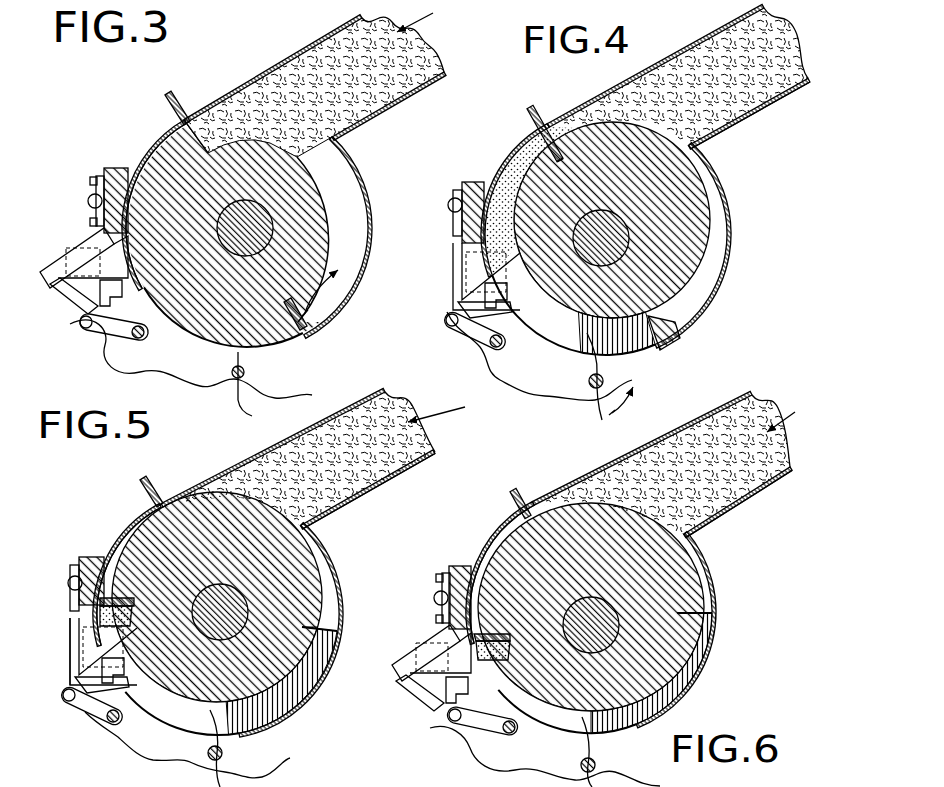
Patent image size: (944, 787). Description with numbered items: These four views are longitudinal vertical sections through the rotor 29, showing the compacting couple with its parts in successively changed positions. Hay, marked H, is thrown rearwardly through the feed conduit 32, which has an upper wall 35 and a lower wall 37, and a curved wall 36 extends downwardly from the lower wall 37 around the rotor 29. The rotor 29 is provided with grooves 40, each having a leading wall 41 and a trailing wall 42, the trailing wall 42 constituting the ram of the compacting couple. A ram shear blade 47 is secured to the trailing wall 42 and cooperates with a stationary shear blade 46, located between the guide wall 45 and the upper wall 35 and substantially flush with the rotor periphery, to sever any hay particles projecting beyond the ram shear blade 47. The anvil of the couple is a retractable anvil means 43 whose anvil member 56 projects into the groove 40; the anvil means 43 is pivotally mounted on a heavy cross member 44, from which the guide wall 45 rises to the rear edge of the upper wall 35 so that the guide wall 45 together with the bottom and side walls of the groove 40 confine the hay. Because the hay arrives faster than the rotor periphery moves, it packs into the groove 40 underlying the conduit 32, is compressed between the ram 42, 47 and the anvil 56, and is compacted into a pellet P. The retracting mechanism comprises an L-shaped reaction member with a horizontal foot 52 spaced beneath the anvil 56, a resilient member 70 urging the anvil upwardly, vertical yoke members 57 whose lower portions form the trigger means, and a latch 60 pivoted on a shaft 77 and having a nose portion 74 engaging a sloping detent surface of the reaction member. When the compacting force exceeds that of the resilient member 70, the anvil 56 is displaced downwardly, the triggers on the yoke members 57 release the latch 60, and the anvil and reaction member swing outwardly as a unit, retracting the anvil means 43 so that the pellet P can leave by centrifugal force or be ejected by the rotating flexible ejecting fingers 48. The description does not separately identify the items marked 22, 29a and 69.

In FIG. 4, the direction of material flow 22 is at (518, 176).
In FIG. 3, the rotor 29 is at (318, 219).
In FIG. 4, the rotor 29 is at (693, 296).
In FIG. 5, the rotor 29 is at (310, 573).
In FIG. 6, the rotor 29 is at (683, 582).
In FIG. 3, the rotor shaft 29a is at (270, 243).
In FIG. 4, the rotor shaft 29a is at (629, 243).
In FIG. 5, the rotor shaft 29a is at (220, 612).
In FIG. 6, the rotor shaft 29a is at (591, 625).
In FIG. 3, the feed conduit 32 is at (407, 92).
In FIG. 4, the feed conduit 32 is at (757, 104).
In FIG. 5, the feed conduit 32 is at (397, 476).
In FIG. 6, the feed conduit 32 is at (757, 493).
In FIG. 3, the upper wall of the feed conduit 35 is at (307, 51).
In FIG. 4, the upper wall of the feed conduit 35 is at (705, 43).
In FIG. 5, the upper wall of the feed conduit 35 is at (250, 463).
In FIG. 6, the upper wall of the feed conduit 35 is at (675, 440).
In FIG. 3, the curved wall 36 is at (364, 268).
In FIG. 4, the curved wall 36 is at (722, 197).
In FIG. 5, the curved wall 36 is at (308, 702).
In FIG. 6, the curved wall 36 is at (713, 635).
In FIG. 4, the lower wall of the feed conduit 37 is at (716, 131).
In FIG. 5, the lower wall of the feed conduit 37 is at (343, 503).
In FIG. 6, the lower wall of the feed conduit 37 is at (707, 521).
In FIG. 3, the groove 40 is at (345, 192).
In FIG. 4, the groove 40 is at (650, 358).
In FIG. 5, the groove 40 is at (300, 673).
In FIG. 6, the groove 40 is at (687, 665).
In FIG. 3, the leading wall 41 is at (200, 115).
In FIG. 4, the leading wall 41 is at (677, 328).
In FIG. 5, the leading wall 41 is at (327, 632).
In FIG. 3, the trailing wall 42 is at (307, 322).
In FIG. 4, the trailing wall 42 is at (558, 123).
In FIG. 3, the retractable anvil means 43 is at (60, 248).
In FIG. 4, the retractable anvil means 43 is at (448, 268).
In FIG. 5, the retractable anvil means 43 is at (68, 648).
In FIG. 6, the retractable anvil means 43 is at (412, 632).
In FIG. 3, the heavy cross member 44 is at (118, 168).
In FIG. 4, the heavy cross member 44 is at (480, 177).
In FIG. 5, the heavy cross member 44 is at (98, 557).
In FIG. 6, the heavy cross member 44 is at (460, 567).
In FIG. 3, the guide wall 45 is at (165, 127).
In FIG. 5, the guide wall 45 is at (150, 516).
In FIG. 6, the guide wall 45 is at (510, 533).
In FIG. 3, the stationary shear blade 46 is at (165, 97).
In FIG. 4, the stationary shear blade 46 is at (530, 107).
In FIG. 5, the stationary shear blade 46 is at (145, 481).
In FIG. 6, the stationary shear blade 46 is at (517, 489).
In FIG. 3, the ram shear blade 47 is at (302, 332).
In FIG. 4, the ram shear blade 47 is at (517, 170).
In FIG. 5, the ram shear blade 47 is at (110, 600).
In FIG. 6, the ram shear blade 47 is at (492, 637).
In FIG. 3, the rotating flexible ejecting fingers 48 is at (232, 398).
In FIG. 4, the rotating flexible ejecting fingers 48 is at (592, 346).
In FIG. 5, the rotating flexible ejecting fingers 48 is at (208, 738).
In FIG. 6, the rotating flexible ejecting fingers 48 is at (587, 738).
In FIG. 6, the horizontal foot 52 is at (430, 703).
In FIG. 5, the anvil member 56 is at (120, 624).
In FIG. 5, the vertical yoke members 57 is at (73, 667).
In FIG. 3, the latch 60 is at (115, 333).
In FIG. 4, the latch 60 is at (462, 324).
In FIG. 5, the latch 60 is at (85, 698).
In FIG. 6, the latch 60 is at (463, 731).
In FIG. 3, the pivot 69 is at (100, 172).
In FIG. 5, the pivot 69 is at (74, 562).
In FIG. 3, the resilient member 70 is at (99, 290).
In FIG. 4, the resilient member 70 is at (509, 286).
In FIG. 5, the resilient member 70 is at (127, 655).
In FIG. 3, the nose portion 74 is at (80, 323).
In FIG. 5, the nose portion 74 is at (62, 687).
In FIG. 3, the shaft 77 is at (137, 343).
In FIG. 4, the shaft 77 is at (497, 343).
In FIG. 5, the shaft 77 is at (100, 725).
In FIG. 6, the shaft 77 is at (545, 756).
In FIG. 3, the hay material H is at (412, 53).
In FIG. 4, the hay material H is at (760, 47).
In FIG. 5, the hay material H is at (426, 440).
In FIG. 6, the hay material H is at (748, 438).
In FIG. 5, the pellet P is at (135, 615).
In FIG. 6, the pellet P is at (488, 653).